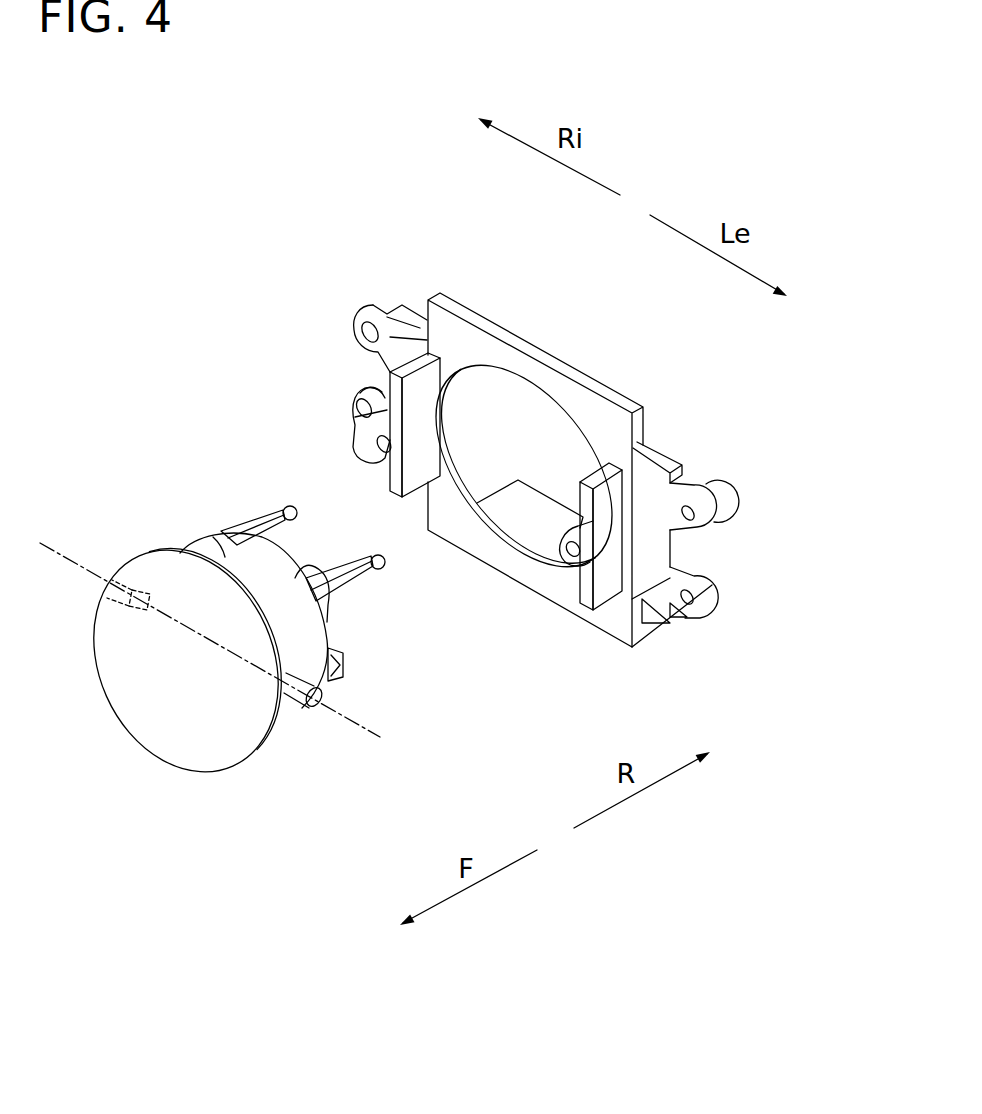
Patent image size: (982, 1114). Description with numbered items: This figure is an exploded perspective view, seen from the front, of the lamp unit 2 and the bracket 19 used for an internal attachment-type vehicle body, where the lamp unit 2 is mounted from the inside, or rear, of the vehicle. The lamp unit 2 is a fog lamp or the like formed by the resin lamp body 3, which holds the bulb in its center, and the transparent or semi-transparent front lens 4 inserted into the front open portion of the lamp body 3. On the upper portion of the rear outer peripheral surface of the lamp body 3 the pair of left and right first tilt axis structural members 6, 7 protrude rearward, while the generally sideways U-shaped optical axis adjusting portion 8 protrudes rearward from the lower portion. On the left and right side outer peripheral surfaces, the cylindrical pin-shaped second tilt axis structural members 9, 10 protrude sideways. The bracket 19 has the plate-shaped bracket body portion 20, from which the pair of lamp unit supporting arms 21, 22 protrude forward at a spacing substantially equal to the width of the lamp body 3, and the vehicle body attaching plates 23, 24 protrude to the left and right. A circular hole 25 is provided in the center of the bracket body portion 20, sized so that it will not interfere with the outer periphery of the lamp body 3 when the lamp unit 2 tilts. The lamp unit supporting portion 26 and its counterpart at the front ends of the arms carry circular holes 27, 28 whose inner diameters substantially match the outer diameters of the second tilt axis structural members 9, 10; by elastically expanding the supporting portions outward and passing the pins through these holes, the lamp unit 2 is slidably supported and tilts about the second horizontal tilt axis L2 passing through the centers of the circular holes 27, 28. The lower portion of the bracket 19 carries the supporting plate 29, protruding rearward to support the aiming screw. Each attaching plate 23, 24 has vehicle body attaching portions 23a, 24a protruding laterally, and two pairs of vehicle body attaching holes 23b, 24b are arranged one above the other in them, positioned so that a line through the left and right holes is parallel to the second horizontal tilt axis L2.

The lamp unit 2 is at (172, 485).
The lamp body 3 is at (223, 557).
The front lens 4 is at (127, 563).
The first tilt axis structural member 6 is at (364, 586).
The first tilt axis structural member 7 is at (258, 520).
The optical axis adjusting portion 8 is at (333, 686).
The second tilt axis structural member 9 is at (325, 703).
The second tilt axis structural member 10 is at (123, 598).
The second horizontal tilt axis L2 is at (347, 723).
The bracket 19 is at (487, 300).
The bracket body portion 20 is at (597, 382).
The lamp unit supporting arm 21 is at (600, 588).
The lamp unit supporting arm 22 is at (422, 487).
The vehicle body attaching plate 23 is at (660, 455).
The vehicle body attaching portion 23a is at (688, 487).
The vehicle body attaching hole 23b is at (690, 510).
The vehicle body attaching plate 24 is at (413, 317).
The vehicle body attaching portion 24a is at (382, 308).
The vehicle body attaching hole 24b is at (362, 330).
The circular hole 25 is at (512, 378).
The lamp unit supporting portion 26 is at (375, 388).
The circular hole 27 is at (575, 563).
The circular hole 28 is at (382, 452).
The supporting plate 29 is at (502, 510).